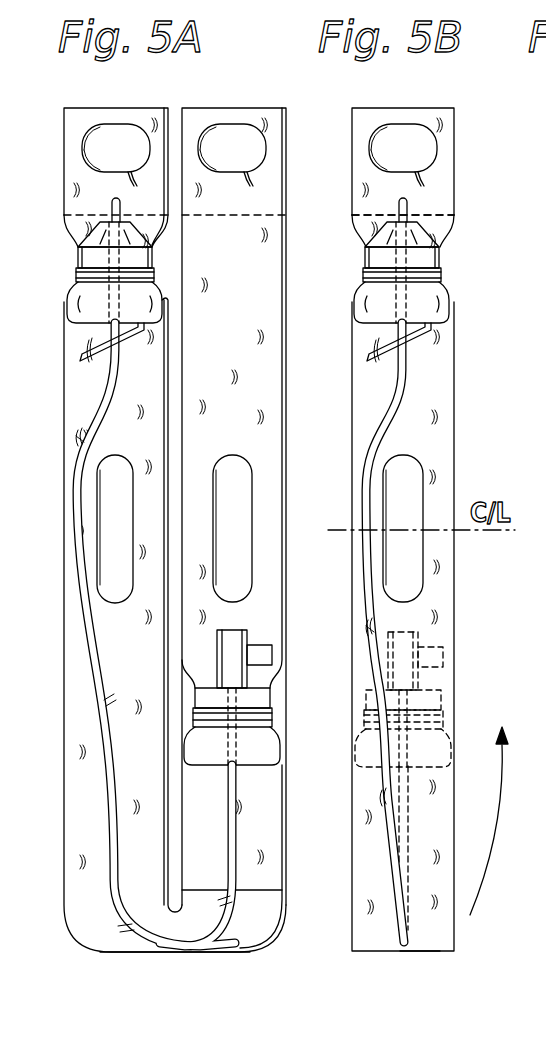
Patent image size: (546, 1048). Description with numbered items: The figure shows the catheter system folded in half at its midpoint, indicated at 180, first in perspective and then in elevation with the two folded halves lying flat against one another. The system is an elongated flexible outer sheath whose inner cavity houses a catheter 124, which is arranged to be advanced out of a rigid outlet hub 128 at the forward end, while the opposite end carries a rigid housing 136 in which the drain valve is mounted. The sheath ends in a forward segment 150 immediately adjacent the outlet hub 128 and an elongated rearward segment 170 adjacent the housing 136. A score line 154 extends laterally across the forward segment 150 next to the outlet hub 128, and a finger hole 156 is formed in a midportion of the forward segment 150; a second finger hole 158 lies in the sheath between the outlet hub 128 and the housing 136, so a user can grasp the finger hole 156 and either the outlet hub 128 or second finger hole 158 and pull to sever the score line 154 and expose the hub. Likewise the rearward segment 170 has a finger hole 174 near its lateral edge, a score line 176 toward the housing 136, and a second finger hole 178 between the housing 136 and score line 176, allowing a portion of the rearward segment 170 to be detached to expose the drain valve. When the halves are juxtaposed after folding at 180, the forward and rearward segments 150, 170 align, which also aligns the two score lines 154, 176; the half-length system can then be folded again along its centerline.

In FIG. 5A, the forward segment 150 is at (83, 118).
In FIG. 5B, the forward segment 150 is at (403, 529).
In FIG. 5A, the finger hole 156 is at (110, 143).
In FIG. 5B, the finger hole 156 is at (403, 155).
In FIG. 5A, the finger hole 174 is at (229, 143).
In FIG. 5A, the rearward segment 170 is at (261, 118).
In FIG. 5A, the score line 154 is at (79, 214).
In FIG. 5B, the score line 154 is at (437, 213).
In FIG. 5A, the score line 176 is at (253, 212).
In FIG. 5A, the rigid outlet hub 128 is at (72, 306).
In FIG. 5B, the rigid outlet hub 128 is at (401, 260).
In FIG. 5A, the catheter 124 is at (75, 497).
In FIG. 5B, the catheter 124 is at (398, 632).
In FIG. 5A, the second finger hole 158 is at (113, 540).
In FIG. 5B, the second finger hole 158 is at (403, 528).
In FIG. 5A, the second finger hole 178 is at (243, 498).
In FIG. 5A, the rigid housing 136 is at (283, 750).
In FIG. 5B, the rigid housing 136 is at (403, 781).
In FIG. 5A, the fold at midpoint 180 is at (163, 953).
In FIG. 5B, the fold at midpoint 180 is at (432, 952).